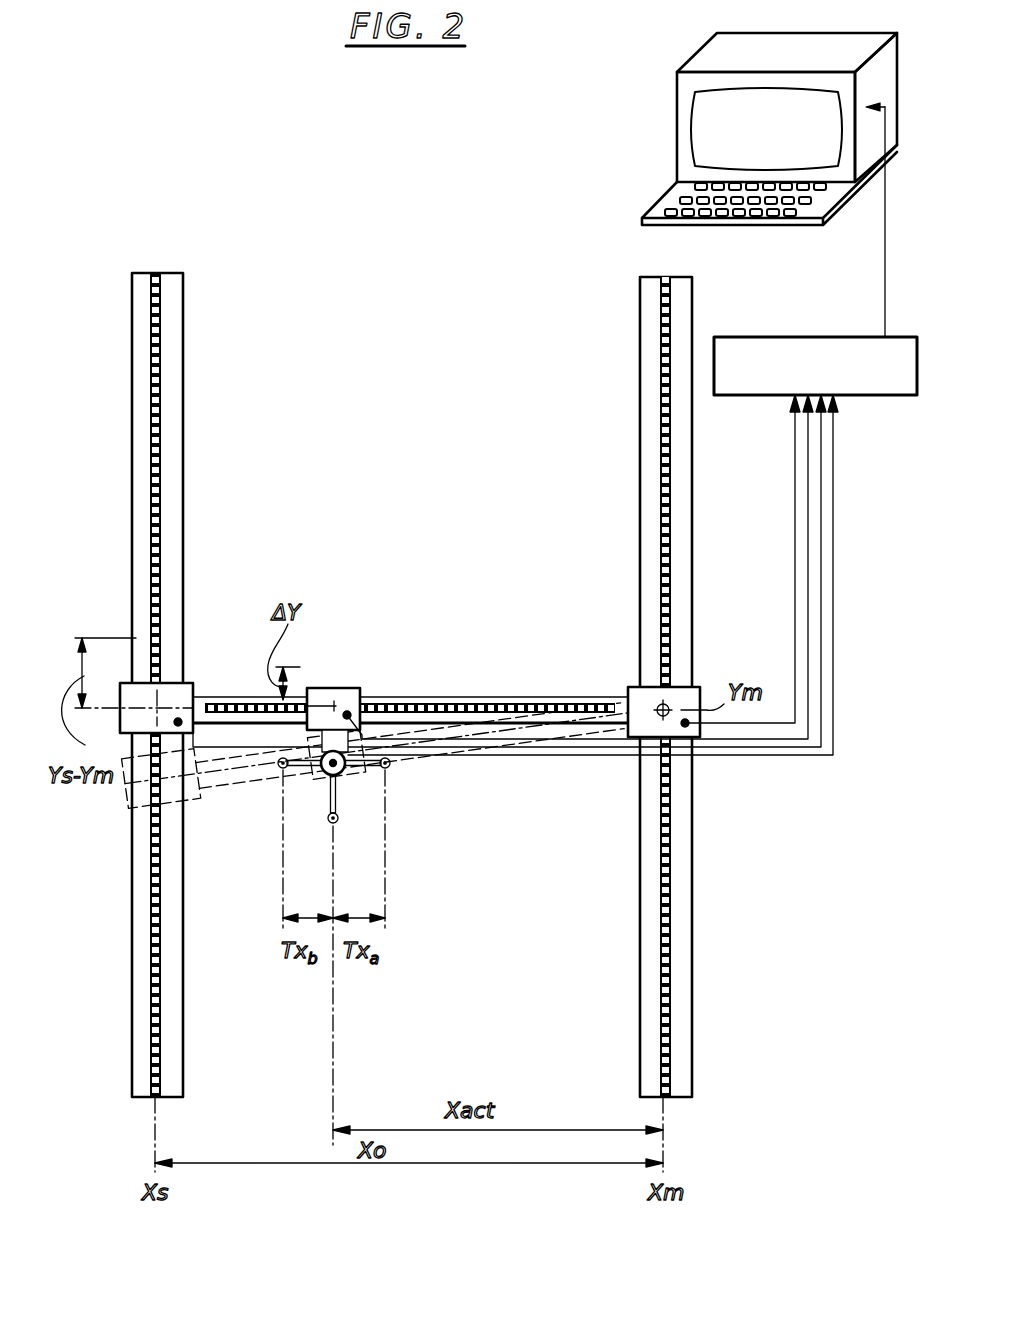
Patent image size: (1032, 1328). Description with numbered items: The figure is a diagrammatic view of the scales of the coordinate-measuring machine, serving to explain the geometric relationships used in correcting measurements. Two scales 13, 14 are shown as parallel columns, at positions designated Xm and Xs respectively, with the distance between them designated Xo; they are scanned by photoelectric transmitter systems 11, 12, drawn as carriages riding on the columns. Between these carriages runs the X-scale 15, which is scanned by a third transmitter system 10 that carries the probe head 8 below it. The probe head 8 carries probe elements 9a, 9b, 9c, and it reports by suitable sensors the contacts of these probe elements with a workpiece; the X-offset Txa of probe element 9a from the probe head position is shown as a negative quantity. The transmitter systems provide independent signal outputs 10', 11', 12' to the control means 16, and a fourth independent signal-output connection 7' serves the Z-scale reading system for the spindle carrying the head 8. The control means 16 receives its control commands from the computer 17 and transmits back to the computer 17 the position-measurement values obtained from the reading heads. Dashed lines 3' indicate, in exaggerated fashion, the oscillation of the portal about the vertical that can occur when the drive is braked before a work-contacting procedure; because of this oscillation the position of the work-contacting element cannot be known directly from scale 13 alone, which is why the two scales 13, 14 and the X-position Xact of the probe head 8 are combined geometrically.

The dashed lines 3' is at (377, 715).
The fourth independent signal-output connection 7' is at (611, 575).
The probe head 8 is at (341, 774).
The probe element 9a is at (388, 769).
The probe element 9b is at (281, 769).
The probe element 9c is at (330, 824).
The transmitter system 10 is at (355, 665).
The signal output 10' is at (580, 567).
The photoelectric transmitter system 11 is at (686, 687).
The signal output 11' is at (742, 559).
The photoelectric transmitter system 12 is at (150, 742).
The signal output 12' is at (536, 571).
The scale 13 is at (658, 340).
The scale 14 is at (152, 338).
The X-scale 15 is at (510, 696).
The control means 16 is at (784, 337).
The computer 17 is at (677, 130).